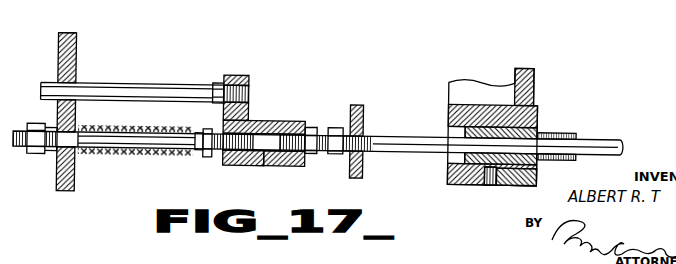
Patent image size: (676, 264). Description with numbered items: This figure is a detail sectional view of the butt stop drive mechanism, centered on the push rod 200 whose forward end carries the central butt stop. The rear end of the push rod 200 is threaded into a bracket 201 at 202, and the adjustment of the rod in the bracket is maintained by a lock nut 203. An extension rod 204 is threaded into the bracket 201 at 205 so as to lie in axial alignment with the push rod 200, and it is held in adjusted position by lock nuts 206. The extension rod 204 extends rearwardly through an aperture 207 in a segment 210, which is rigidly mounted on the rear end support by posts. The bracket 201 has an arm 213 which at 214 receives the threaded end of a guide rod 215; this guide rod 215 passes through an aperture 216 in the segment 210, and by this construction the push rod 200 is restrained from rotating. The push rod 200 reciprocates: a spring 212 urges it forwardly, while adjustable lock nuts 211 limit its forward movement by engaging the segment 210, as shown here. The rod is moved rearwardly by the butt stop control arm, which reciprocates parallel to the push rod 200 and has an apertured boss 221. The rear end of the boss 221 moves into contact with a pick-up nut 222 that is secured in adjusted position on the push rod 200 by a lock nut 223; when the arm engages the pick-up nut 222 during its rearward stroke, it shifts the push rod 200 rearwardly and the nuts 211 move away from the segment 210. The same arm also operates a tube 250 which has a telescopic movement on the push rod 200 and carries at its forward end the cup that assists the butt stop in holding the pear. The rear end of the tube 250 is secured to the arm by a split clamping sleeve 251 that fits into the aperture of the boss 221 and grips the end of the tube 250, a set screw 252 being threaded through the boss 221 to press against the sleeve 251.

The push rod 200 is at (601, 142).
The bracket 201 is at (290, 120).
The threaded connection 202 is at (302, 163).
The lock nut 203 is at (312, 128).
The extension rod 204 is at (148, 150).
The threaded connection 205 is at (223, 162).
The lock nuts 206 is at (205, 156).
The aperture 207 is at (72, 155).
The segment 210 is at (60, 183).
The adjustable lock nuts 211 is at (50, 124).
The spring 212 is at (139, 129).
The arm 213 is at (250, 105).
The threaded connection 214 is at (240, 78).
The guide rod 215 is at (182, 84).
The aperture 216 is at (77, 80).
The apertured boss 221 is at (448, 112).
The pick-up nut 222 is at (365, 118).
The lock nut 223 is at (333, 156).
The tube 250 is at (560, 133).
The split clamping sleeve 251 is at (500, 182).
The set screw 252 is at (488, 187).